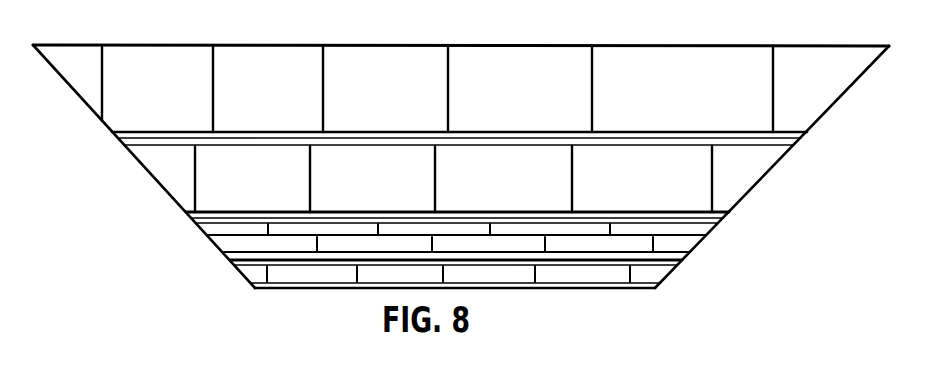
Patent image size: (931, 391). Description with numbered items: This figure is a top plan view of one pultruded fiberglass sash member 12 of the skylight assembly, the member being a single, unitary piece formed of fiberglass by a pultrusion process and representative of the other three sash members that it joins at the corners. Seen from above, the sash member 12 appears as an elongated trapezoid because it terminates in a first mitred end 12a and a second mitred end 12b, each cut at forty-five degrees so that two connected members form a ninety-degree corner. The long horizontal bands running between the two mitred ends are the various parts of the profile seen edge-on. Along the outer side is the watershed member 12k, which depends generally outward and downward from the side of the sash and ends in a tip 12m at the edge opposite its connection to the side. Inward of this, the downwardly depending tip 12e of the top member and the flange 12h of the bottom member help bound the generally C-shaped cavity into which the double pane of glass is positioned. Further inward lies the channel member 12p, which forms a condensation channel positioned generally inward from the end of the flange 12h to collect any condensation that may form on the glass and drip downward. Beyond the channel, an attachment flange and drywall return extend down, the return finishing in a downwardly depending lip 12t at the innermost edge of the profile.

The pultruded fiberglass sash member 12 is at (461, 169).
The first mitred end 12a is at (158, 184).
The second mitred end 12b is at (757, 181).
The watershed member 12k is at (174, 67).
The tip of watershed member 12m is at (658, 45).
The downwardly depending tip 12e is at (395, 214).
The flange 12h is at (212, 231).
The channel member 12p is at (684, 245).
The downwardly depending lip 12t is at (590, 289).